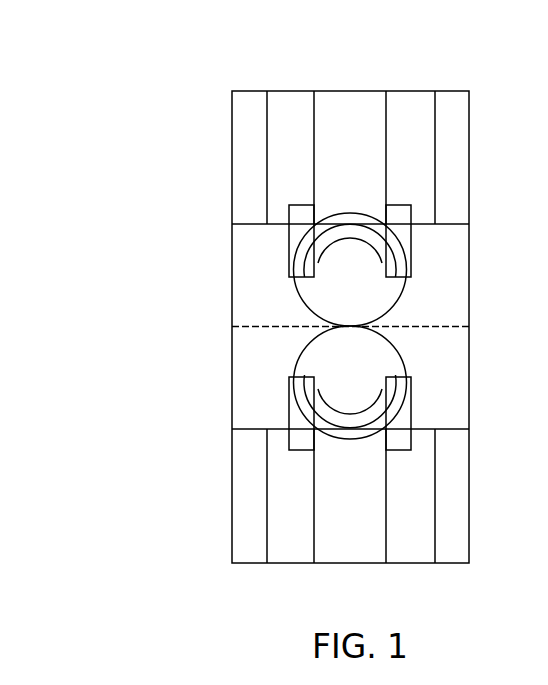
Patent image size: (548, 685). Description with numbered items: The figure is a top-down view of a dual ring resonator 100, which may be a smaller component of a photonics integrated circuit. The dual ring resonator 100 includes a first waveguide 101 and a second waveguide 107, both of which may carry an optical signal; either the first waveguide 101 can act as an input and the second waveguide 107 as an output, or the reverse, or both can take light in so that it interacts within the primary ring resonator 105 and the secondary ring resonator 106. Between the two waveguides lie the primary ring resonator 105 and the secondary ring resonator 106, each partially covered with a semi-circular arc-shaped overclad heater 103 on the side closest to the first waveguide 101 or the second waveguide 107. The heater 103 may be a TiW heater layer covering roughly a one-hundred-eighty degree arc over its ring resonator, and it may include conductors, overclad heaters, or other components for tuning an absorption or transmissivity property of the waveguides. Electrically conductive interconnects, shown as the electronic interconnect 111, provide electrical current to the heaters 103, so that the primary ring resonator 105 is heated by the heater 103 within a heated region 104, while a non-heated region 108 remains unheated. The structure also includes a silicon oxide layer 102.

The dual ring resonator 100 is at (90, 145).
The first waveguide 101 is at (240, 221).
The silicon oxide layer 102 is at (364, 103).
The heater 103 is at (354, 208).
The heated region 104 is at (240, 285).
The primary ring resonator 105 is at (399, 301).
The secondary ring resonator 106 is at (401, 356).
The second waveguide 107 is at (243, 424).
The non-heated region 108 is at (240, 341).
The electronic interconnect 111 is at (290, 99).